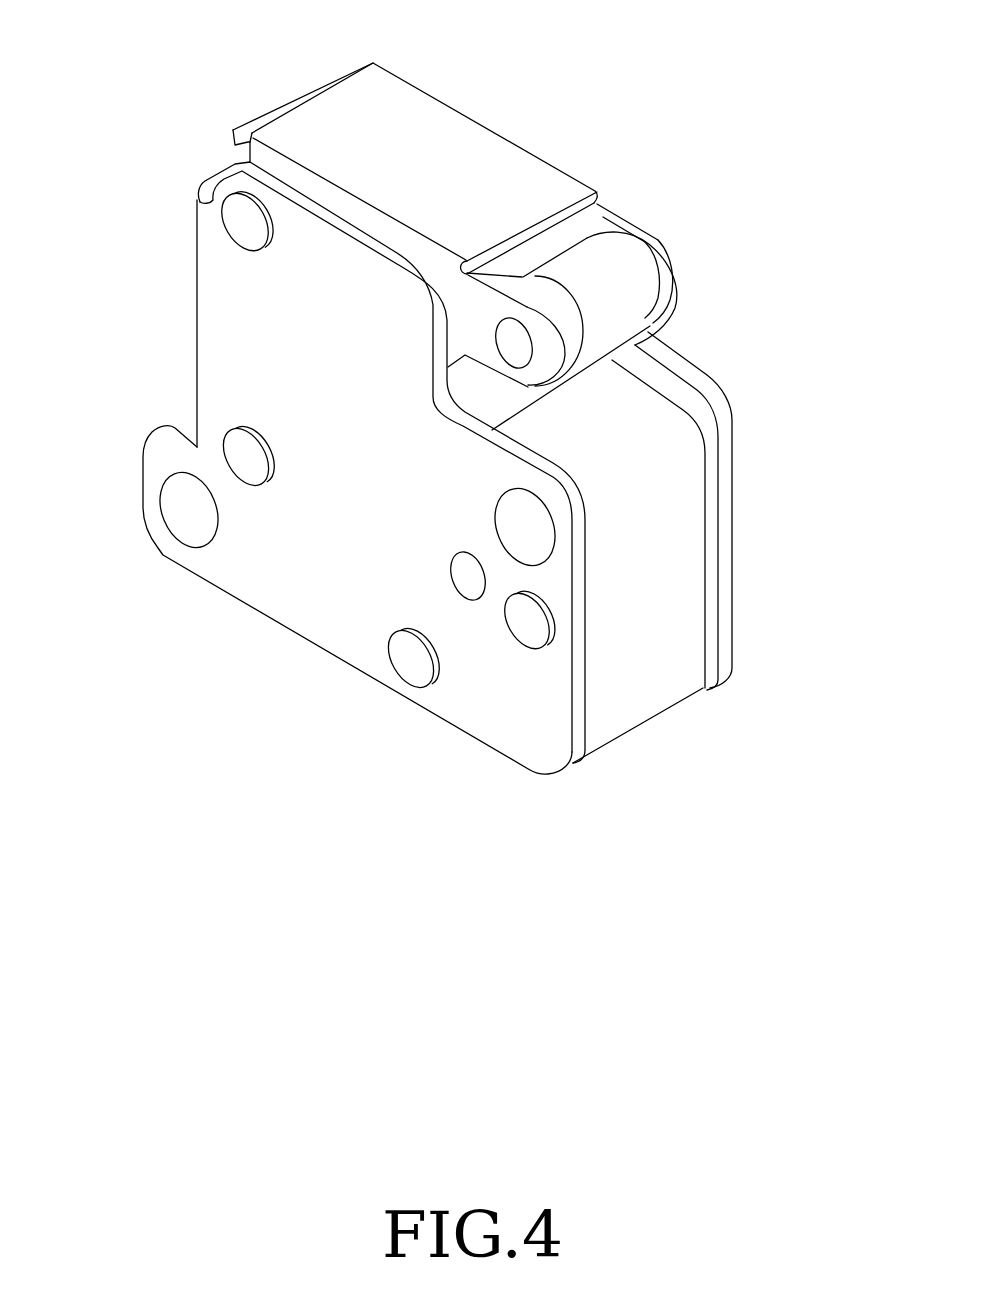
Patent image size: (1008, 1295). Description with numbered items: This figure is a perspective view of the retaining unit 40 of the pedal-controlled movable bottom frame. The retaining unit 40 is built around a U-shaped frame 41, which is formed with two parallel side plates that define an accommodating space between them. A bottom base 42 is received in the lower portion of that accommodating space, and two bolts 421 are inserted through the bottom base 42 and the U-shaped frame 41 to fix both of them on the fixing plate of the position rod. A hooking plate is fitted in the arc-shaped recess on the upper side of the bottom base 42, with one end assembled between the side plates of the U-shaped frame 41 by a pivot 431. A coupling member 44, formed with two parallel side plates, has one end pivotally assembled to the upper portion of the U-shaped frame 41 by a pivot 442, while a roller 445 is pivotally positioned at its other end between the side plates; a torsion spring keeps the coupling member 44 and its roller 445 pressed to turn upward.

The retaining unit 40 is at (510, 87).
The U-shaped frame 41 is at (290, 607).
The bottom base 42 is at (675, 507).
The coupling member 44 is at (523, 163).
The bolts 421 is at (190, 517).
The pivot 431 is at (473, 583).
The pivot 442 is at (243, 227).
The roller 445 is at (613, 267).